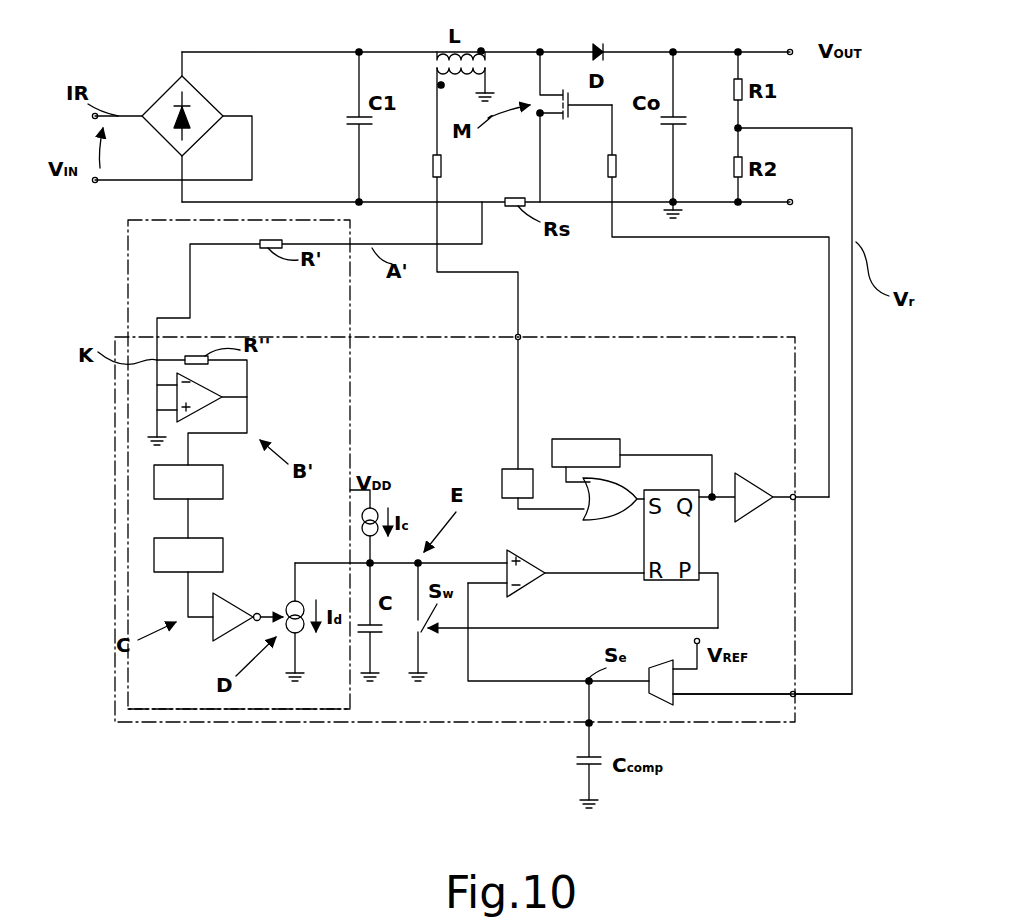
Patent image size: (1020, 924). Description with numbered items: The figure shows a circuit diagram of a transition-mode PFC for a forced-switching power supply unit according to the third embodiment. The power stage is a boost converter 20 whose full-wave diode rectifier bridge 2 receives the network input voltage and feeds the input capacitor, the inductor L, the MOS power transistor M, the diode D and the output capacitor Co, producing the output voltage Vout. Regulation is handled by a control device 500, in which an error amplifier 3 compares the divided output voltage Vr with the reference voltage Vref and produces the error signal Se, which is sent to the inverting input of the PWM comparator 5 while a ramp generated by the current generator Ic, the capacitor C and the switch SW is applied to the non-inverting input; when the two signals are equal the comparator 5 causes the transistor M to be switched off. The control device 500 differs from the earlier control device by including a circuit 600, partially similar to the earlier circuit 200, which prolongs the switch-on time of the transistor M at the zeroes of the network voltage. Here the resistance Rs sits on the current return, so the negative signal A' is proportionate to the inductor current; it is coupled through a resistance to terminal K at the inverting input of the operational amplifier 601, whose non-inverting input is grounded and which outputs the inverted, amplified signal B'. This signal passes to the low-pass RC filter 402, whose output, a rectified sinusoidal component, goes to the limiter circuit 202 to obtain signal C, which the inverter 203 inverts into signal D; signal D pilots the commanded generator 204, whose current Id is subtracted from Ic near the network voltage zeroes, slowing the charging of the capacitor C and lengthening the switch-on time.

The boost converter 20 is at (370, 35).
The full-wave diode rectifier bridge 2 is at (155, 100).
The circuit 200 is at (206, 464).
The control device 500 is at (135, 722).
The circuit 600 is at (240, 709).
The operational amplifier 601 is at (203, 393).
The low-pass RC filter 402 is at (188, 482).
The limiter circuit 202 is at (188, 555).
The inverter 203 is at (232, 610).
The device 204 is at (302, 630).
The PWM comparator 5 is at (530, 581).
The error amplifier 3 is at (750, 671).